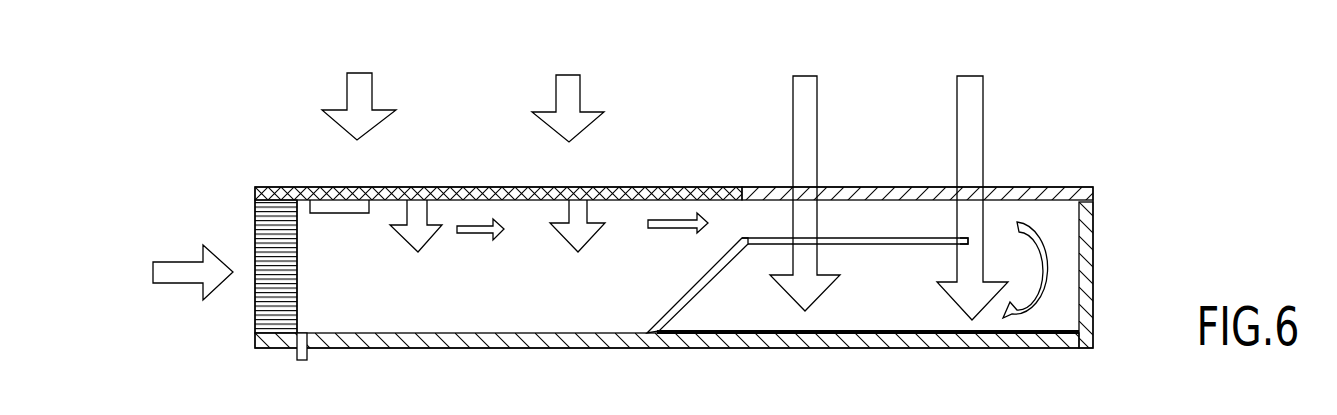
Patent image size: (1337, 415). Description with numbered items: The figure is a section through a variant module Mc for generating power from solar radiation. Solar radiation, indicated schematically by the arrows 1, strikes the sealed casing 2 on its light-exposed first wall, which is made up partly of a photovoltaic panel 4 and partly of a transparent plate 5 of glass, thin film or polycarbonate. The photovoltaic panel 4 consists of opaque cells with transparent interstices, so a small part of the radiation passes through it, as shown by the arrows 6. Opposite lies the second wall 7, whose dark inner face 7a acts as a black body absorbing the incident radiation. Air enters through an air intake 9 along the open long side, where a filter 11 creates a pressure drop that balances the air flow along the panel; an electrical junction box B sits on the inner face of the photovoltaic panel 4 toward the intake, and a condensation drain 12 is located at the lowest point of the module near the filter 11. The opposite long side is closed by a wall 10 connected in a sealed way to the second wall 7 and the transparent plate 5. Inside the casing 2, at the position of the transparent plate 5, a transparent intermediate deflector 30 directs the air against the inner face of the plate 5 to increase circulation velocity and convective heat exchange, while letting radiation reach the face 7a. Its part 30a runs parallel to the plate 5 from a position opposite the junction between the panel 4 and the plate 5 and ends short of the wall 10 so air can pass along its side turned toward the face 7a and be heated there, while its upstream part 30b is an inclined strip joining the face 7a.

The solar radiation arrows 1 is at (357, 92).
The casing 2 is at (667, 182).
The photovoltaic panel 4 is at (452, 187).
The transparent plate 5 is at (913, 195).
The radiation arrows through panel 6 is at (572, 210).
The second wall 7 is at (563, 345).
The inner face of second wall 7a is at (922, 332).
The air intake 9 is at (297, 298).
The closing wall 10 is at (1095, 260).
The filter 11 is at (269, 217).
The condensation drain 12 is at (308, 360).
The intermediate deflector 30 is at (768, 238).
The deflector part parallel to plate 30a is at (855, 240).
The upstream inclined strip 30b is at (700, 288).
The electrical junction box B is at (330, 203).
The variant module Mc is at (645, 163).